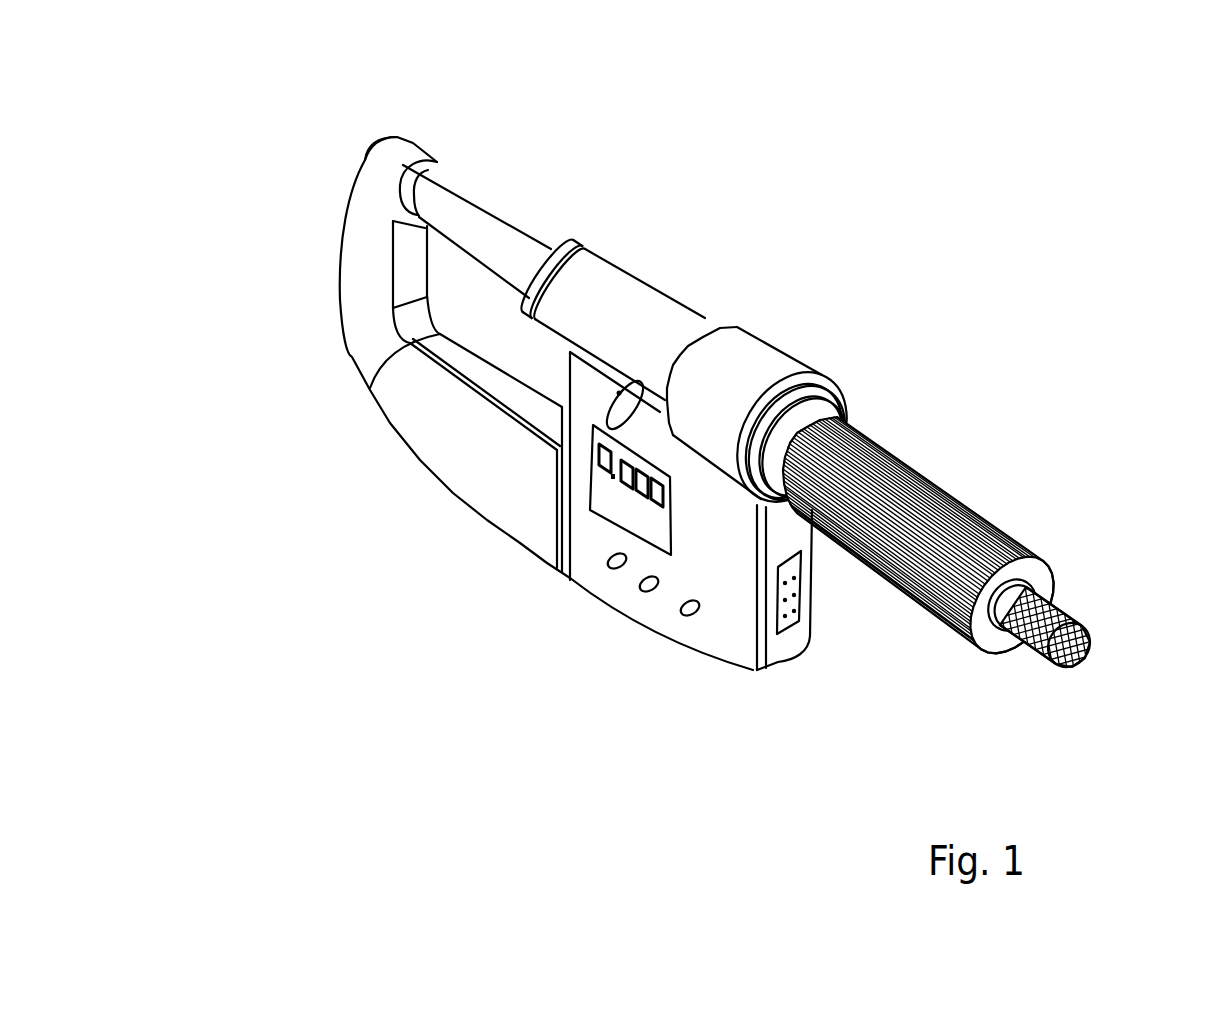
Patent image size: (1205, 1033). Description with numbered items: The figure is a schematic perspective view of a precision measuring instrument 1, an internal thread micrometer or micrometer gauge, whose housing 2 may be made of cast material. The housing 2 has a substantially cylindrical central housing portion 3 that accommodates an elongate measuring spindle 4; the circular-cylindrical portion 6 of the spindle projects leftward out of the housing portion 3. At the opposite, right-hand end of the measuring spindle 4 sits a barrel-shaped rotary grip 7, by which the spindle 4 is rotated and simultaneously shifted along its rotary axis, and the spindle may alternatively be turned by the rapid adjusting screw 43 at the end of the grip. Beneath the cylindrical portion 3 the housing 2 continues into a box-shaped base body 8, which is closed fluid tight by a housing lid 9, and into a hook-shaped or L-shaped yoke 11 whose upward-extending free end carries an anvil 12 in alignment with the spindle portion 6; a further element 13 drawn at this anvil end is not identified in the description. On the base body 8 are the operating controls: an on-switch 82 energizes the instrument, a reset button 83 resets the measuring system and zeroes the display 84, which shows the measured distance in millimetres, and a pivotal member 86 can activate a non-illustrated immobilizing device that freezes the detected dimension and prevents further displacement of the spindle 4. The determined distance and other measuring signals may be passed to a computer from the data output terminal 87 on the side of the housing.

The precision measuring instrument 1 is at (912, 195).
The housing 2 is at (648, 180).
The central housing portion 3 is at (625, 292).
The measuring spindle 4 is at (494, 148).
The circular-cylindrical portion 6 is at (495, 222).
The rotary grip 7 is at (957, 441).
The base body 8 is at (608, 655).
The housing lid 9 is at (733, 635).
The yoke 11 is at (347, 398).
The anvil 12 is at (410, 192).
The anvil collar 13 is at (450, 183).
The rapid adjusting screw 43 is at (1065, 608).
The on-switch 82 is at (683, 620).
The reset button 83 is at (605, 563).
The display 84 is at (623, 502).
The pivotal member 86 is at (627, 402).
The data output terminal 87 is at (808, 600).